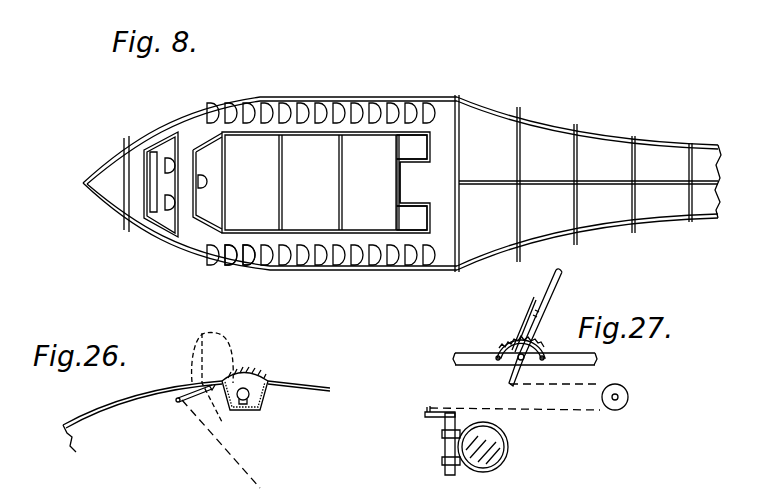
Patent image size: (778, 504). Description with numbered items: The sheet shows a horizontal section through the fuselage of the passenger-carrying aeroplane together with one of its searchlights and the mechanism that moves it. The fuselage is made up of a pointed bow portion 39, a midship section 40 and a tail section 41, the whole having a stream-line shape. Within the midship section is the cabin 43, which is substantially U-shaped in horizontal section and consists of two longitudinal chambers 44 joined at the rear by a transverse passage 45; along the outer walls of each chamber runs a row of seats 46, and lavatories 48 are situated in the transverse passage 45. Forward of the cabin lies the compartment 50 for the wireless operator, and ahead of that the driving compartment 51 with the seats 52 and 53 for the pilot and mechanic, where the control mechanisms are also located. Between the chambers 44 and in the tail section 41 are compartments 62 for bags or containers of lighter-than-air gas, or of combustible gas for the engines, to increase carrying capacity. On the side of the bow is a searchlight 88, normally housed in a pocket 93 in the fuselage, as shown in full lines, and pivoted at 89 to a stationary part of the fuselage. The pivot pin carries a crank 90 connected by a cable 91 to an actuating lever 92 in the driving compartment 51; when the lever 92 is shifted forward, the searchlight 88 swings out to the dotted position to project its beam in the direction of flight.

In FIG. 8, the bow portion 39 is at (105, 210).
In FIG. 8, the midship section 40 is at (423, 97).
In FIG. 8, the tail section 41 is at (602, 142).
In FIG. 8, the cabin 43 is at (272, 102).
In FIG. 8, the longitudinal chambers 44 is at (343, 104).
In FIG. 8, the transverse passage 45 is at (420, 182).
In FIG. 8, the row of seats 46 is at (247, 262).
In FIG. 8, the lavatories 48 is at (418, 150).
In FIG. 8, the compartment for the wireless operator 50 is at (202, 150).
In FIG. 8, the driving compartment 51 is at (135, 147).
In FIG. 8, the seat 52 is at (167, 208).
In FIG. 8, the seat 53 is at (167, 158).
In FIG. 8, the compartments 62 is at (326, 182).
In FIG. 26, the searchlight 88 is at (268, 402).
In FIG. 27, the searchlight 88 is at (510, 449).
In FIG. 26, the pivot 89 is at (212, 392).
In FIG. 27, the pivot 89 is at (445, 448).
In FIG. 26, the crank 90 is at (178, 398).
In FIG. 27, the crank 90 is at (433, 415).
In FIG. 26, the cable 91 is at (250, 473).
In FIG. 27, the cable 91 is at (562, 410).
In FIG. 27, the actuating lever 92 is at (557, 297).
In FIG. 26, the pocket 93 is at (268, 382).